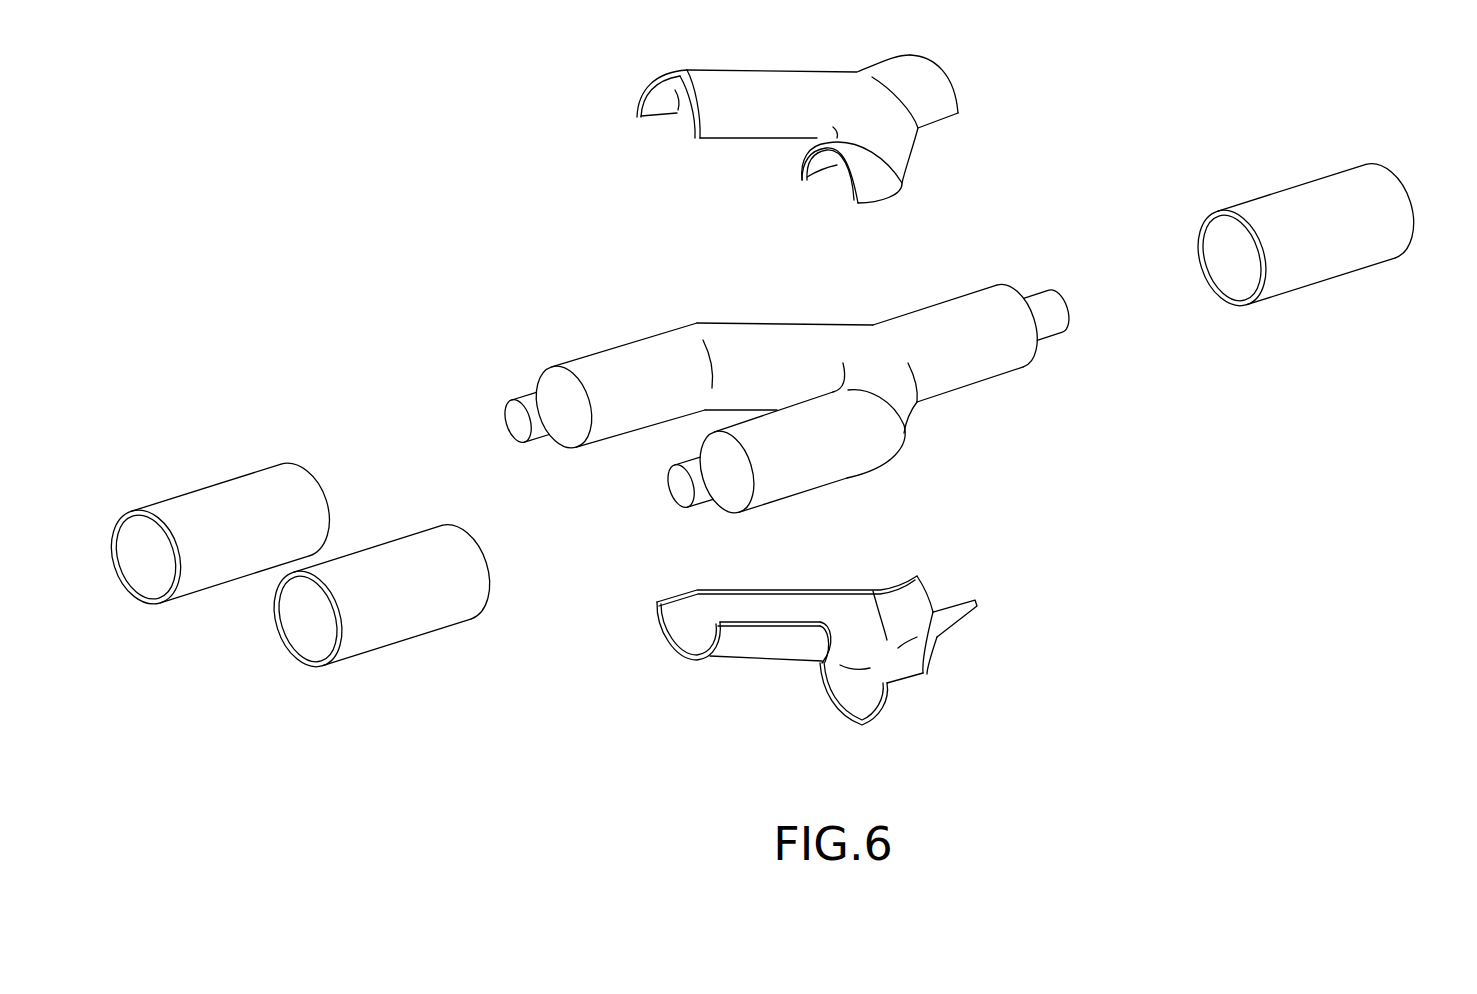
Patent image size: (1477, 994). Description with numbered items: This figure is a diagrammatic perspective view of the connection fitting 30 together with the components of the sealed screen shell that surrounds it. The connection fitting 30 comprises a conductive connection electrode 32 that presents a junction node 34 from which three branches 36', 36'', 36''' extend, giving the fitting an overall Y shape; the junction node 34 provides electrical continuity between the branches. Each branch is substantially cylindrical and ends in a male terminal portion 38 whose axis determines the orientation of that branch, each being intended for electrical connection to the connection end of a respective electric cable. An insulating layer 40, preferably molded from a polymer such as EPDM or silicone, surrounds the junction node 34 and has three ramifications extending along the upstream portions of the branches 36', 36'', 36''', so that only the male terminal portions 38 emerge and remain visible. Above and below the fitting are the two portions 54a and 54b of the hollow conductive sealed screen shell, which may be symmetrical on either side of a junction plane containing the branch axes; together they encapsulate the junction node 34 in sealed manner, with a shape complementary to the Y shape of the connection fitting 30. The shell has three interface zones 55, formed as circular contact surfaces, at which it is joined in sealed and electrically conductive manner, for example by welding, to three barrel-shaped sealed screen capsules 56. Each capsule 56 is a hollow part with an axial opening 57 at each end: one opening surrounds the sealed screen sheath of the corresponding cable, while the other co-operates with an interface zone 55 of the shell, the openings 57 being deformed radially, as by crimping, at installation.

The connection fitting 30 is at (1092, 265).
The conductive connection electrode 32 is at (542, 430).
The junction node 34 is at (846, 337).
The branch 36' is at (978, 358).
The branch 36'' is at (593, 376).
The branch 36''' is at (838, 455).
The male terminal portion 38 is at (510, 420).
The insulating layer 40 is at (640, 338).
The shell portion 54a is at (973, 620).
The shell portion 54b is at (930, 85).
The interface zone 55 is at (933, 57).
The sealed screen capsule 56 is at (207, 485).
The axial opening 57 is at (320, 513).